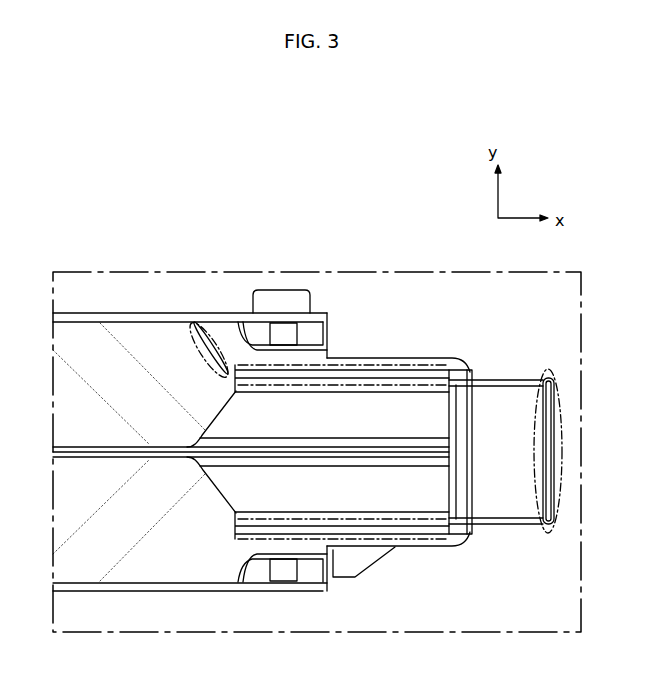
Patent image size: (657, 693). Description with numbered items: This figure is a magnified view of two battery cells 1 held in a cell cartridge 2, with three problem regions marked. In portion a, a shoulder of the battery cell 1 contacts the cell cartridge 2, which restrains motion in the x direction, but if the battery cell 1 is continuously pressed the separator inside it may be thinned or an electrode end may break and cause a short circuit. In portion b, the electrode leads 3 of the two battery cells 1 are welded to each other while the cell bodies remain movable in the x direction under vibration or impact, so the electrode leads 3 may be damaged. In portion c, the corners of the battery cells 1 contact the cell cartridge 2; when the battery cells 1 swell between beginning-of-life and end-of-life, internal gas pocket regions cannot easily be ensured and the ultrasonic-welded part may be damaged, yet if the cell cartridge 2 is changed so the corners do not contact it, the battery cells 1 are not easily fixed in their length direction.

The battery cell 1 is at (75, 392).
The cell cartridge 2 is at (460, 360).
The electrode lead 3 is at (556, 440).
The portion a is at (224, 345).
The portion b is at (547, 377).
The portion c is at (398, 363).